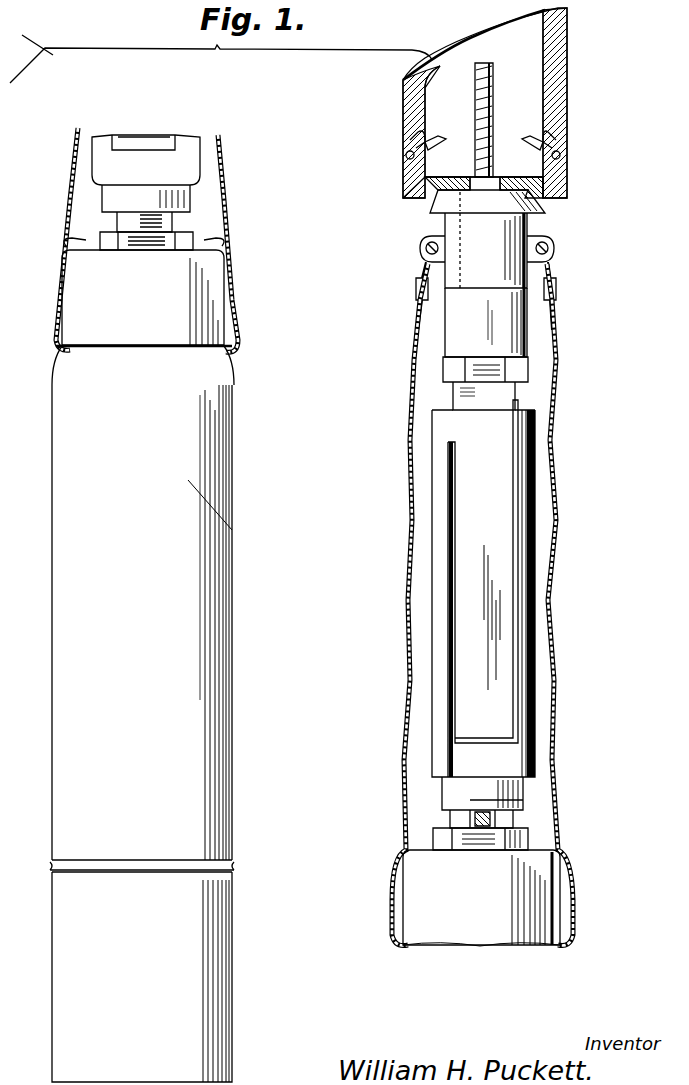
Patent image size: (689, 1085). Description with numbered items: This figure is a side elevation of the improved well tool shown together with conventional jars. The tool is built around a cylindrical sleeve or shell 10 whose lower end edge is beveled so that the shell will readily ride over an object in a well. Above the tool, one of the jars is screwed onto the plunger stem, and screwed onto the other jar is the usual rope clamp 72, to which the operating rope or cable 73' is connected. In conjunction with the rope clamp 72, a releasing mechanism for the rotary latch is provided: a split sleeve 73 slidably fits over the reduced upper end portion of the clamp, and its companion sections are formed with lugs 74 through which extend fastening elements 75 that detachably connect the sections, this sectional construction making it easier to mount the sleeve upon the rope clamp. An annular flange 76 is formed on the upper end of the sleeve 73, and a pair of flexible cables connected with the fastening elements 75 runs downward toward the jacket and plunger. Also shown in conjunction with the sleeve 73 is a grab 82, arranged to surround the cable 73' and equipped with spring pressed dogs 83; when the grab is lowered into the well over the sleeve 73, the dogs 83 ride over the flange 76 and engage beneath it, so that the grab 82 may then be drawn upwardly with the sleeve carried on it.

The cylindrical sleeve or shell 10 is at (142, 977).
The rope clamp 72 is at (527, 330).
The split sleeve 73 is at (535, 249).
The operating rope or cable 73' is at (506, 120).
The lugs 74 is at (556, 262).
The fastening elements 75 is at (556, 247).
The annular flange 76 is at (545, 210).
The grab 82 is at (560, 75).
The spring pressed dogs 83 is at (483, 152).